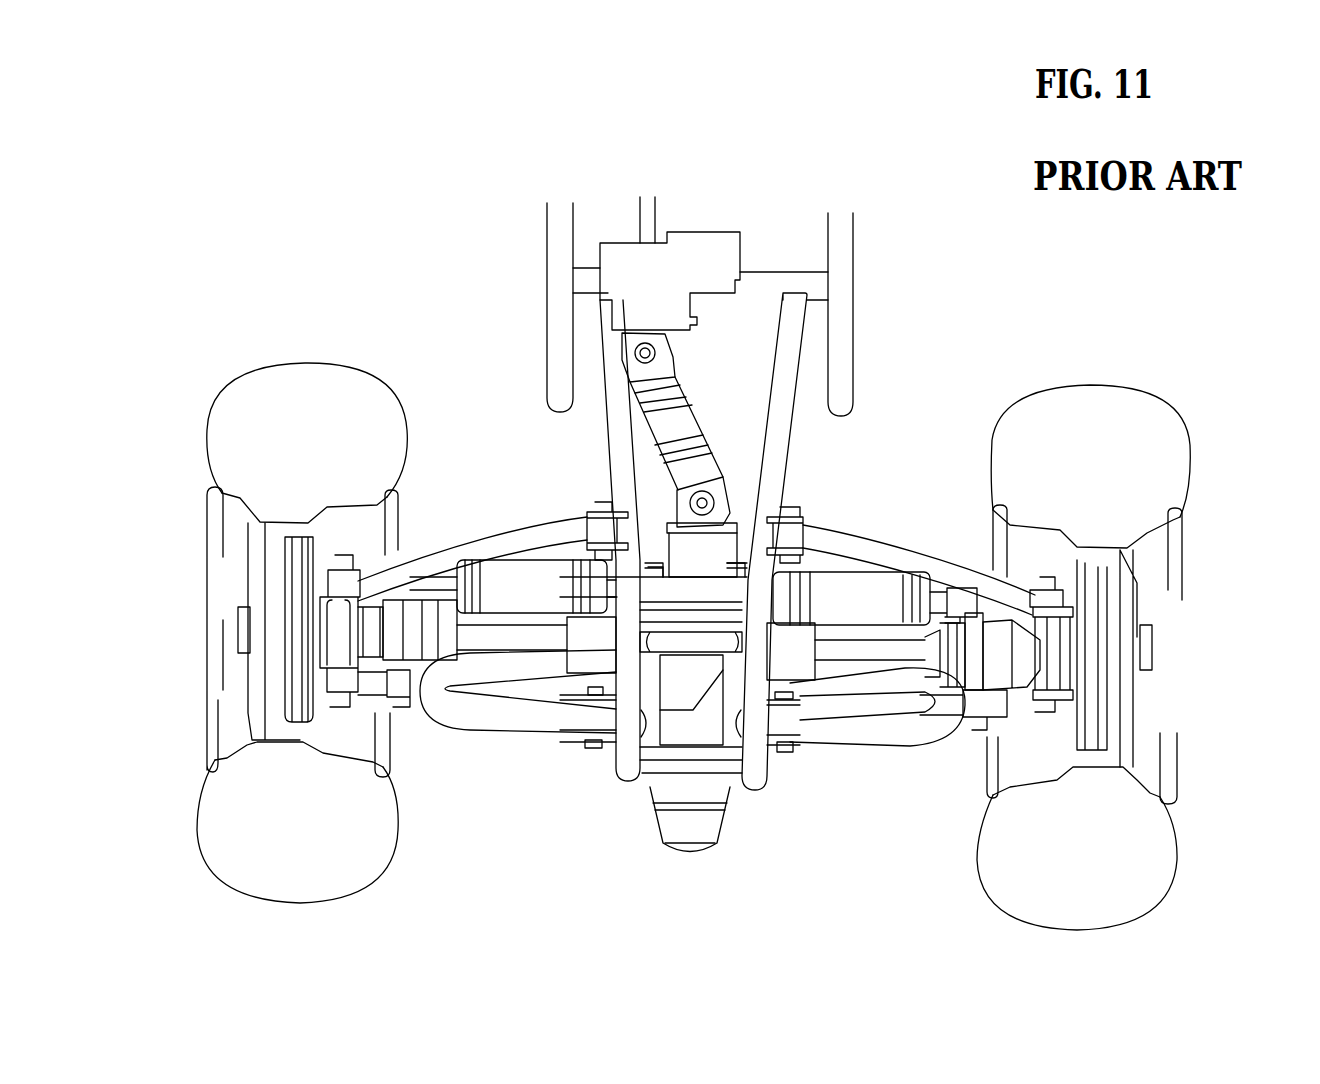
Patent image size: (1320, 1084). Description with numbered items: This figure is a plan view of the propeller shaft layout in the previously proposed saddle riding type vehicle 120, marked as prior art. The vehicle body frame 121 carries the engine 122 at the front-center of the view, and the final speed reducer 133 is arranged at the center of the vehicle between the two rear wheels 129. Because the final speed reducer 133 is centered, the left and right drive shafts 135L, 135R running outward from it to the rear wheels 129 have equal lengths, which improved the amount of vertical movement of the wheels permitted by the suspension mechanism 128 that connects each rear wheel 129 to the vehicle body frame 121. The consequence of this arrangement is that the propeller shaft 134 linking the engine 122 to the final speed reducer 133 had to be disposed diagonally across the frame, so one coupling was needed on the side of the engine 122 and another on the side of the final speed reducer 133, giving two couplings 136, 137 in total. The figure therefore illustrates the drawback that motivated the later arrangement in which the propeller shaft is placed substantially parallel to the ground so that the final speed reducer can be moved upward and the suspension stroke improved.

The saddle riding type vehicle 120 is at (333, 212).
The vehicle body frame 121 is at (876, 305).
The engine 122 is at (623, 213).
The suspension mechanism 128 is at (520, 510).
The rear wheel 129 is at (255, 372).
The final speed reducer 133 is at (657, 530).
The propeller shaft 134 is at (690, 422).
The left drive shaft 135L is at (517, 640).
The right drive shaft 135R is at (860, 655).
The coupling 136 is at (673, 343).
The coupling 137 is at (720, 497).